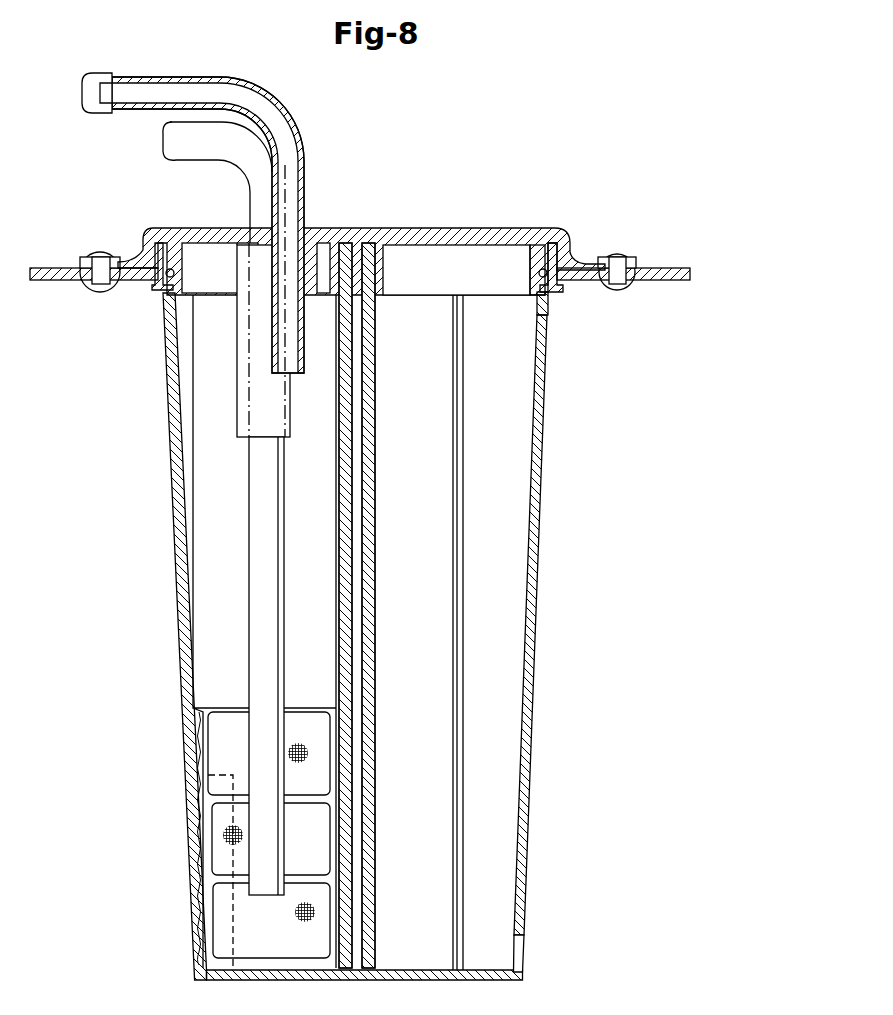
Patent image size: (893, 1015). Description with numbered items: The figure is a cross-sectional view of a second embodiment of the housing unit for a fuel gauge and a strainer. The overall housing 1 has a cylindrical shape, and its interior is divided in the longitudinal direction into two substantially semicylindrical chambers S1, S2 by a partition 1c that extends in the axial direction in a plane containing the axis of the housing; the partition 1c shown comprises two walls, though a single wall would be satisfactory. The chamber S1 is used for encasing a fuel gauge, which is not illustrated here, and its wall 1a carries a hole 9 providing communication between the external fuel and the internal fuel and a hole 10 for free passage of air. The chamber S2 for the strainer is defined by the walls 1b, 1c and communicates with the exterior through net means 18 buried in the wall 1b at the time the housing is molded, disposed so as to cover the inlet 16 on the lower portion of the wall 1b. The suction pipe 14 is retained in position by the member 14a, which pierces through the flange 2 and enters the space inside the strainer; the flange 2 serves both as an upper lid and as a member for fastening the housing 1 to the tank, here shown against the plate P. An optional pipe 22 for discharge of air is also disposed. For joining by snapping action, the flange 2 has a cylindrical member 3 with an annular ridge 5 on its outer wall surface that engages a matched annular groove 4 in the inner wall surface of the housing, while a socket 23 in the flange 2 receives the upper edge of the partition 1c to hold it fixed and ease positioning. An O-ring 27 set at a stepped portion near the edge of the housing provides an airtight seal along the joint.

The housing 1 is at (331, 611).
The wall of the chamber S1 1a is at (537, 630).
The wall of the chamber S2 1b is at (177, 637).
The partition 1c is at (373, 632).
The flange 2 is at (361, 227).
The cylindrical member 3 is at (532, 268).
The annular groove 4 is at (565, 282).
The annular ridge 5 is at (543, 256).
The hole 9 is at (524, 951).
The hole 10 is at (540, 343).
The suction pipe 14 is at (187, 155).
The member 14a is at (245, 352).
The inlet 16 is at (230, 922).
The net means 18 is at (218, 760).
The pipe for discharge of air 22 is at (163, 97).
The socket 23 is at (380, 268).
The O-ring 27 is at (153, 282).
The mounting plate P is at (63, 284).
The chamber S1 is at (432, 643).
The chamber S2 is at (235, 643).